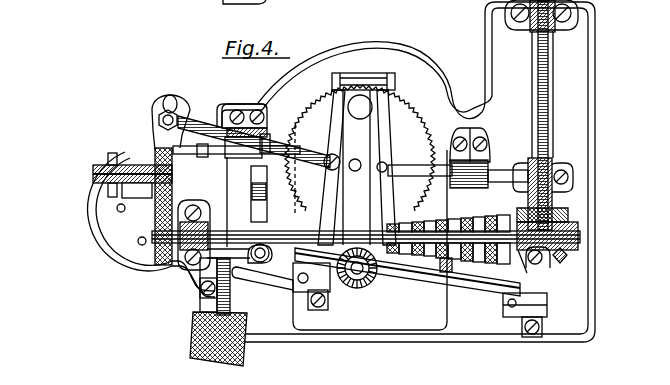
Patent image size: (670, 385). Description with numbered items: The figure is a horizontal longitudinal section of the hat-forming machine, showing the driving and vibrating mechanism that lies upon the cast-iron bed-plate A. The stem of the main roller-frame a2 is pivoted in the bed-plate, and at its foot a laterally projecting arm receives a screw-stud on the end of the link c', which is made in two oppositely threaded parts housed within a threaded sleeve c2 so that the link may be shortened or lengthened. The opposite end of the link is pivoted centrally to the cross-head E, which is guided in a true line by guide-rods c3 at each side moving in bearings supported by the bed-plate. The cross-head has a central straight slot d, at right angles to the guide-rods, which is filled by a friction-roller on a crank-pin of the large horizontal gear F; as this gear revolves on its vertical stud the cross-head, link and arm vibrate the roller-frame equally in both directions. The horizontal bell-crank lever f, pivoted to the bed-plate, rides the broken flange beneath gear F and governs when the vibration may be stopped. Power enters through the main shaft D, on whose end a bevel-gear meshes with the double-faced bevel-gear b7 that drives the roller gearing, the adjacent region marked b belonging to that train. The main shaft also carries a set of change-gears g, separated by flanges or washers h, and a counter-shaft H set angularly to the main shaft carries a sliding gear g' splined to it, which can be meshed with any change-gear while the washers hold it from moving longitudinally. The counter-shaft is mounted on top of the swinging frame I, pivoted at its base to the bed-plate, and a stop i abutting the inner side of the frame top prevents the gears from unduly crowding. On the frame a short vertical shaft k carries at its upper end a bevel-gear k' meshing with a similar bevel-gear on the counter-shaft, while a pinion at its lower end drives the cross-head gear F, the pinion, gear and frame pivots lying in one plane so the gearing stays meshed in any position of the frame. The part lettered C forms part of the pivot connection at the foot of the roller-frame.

The bed-plate A is at (341, 171).
The lever pivot C is at (161, 187).
The main roller-frame a2 is at (132, 175).
The double-faced bevel-gear b7 is at (174, 172).
The toothed wheel b is at (352, 148).
The bell-crank lever f is at (259, 194).
The main shaft D is at (366, 235).
The slot d is at (342, 194).
The cross-head E is at (352, 167).
The horizontal gear F is at (390, 167).
The link c' is at (259, 143).
The threaded sleeve c2 is at (246, 131).
The guide-rods c3 is at (458, 158).
The change-gears g is at (448, 233).
The flanges or washers h is at (436, 177).
The bevel-gear k' is at (355, 274).
The short shaft k is at (322, 287).
The counter-shaft H is at (407, 272).
The swinging frame I is at (525, 309).
The stop i is at (552, 272).
The sliding gear g' is at (455, 284).